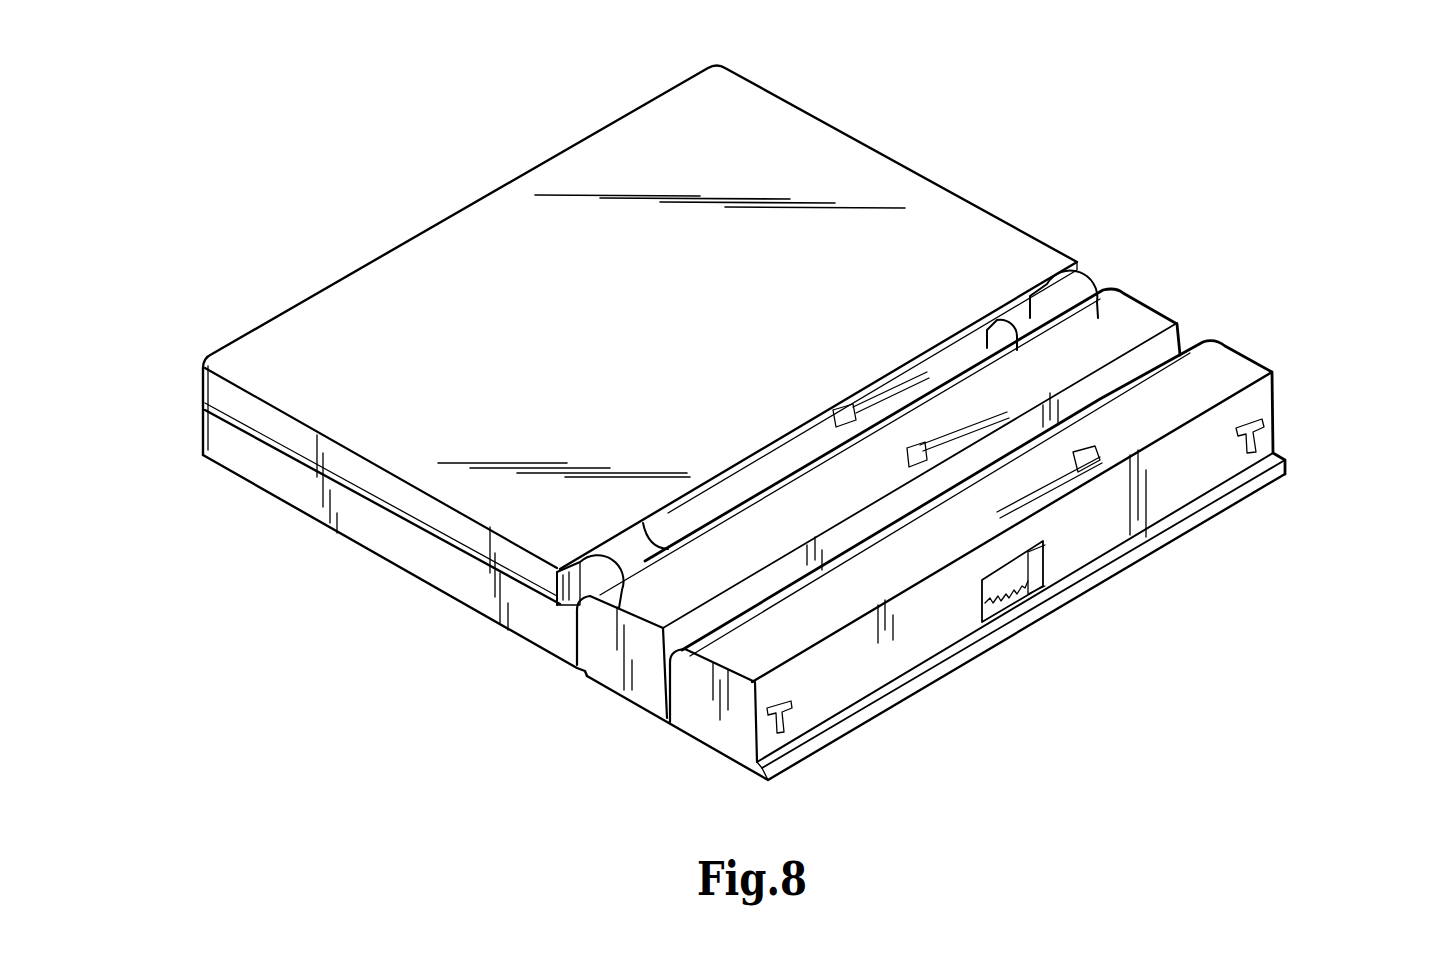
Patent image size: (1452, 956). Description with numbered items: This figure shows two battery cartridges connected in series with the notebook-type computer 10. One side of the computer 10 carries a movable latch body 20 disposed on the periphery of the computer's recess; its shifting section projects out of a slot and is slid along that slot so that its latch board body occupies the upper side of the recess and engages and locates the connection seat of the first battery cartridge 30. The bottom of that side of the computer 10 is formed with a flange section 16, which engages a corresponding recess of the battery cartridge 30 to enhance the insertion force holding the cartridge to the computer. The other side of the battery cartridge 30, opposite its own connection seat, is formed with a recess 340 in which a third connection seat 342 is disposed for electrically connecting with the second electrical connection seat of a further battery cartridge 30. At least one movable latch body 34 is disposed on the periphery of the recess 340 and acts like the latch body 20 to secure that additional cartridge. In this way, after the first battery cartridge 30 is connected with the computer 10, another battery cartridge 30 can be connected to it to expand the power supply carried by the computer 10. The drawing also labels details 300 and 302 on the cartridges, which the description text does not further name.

The notebook-type computer 10 is at (933, 242).
The flange section 16 is at (577, 670).
The movable latch body 20 is at (845, 403).
The battery cartridge 30 is at (1147, 296).
The movable latch body 34 is at (1095, 292).
The latch tab 300 is at (785, 717).
The tray 302 is at (668, 727).
The recess 340 is at (1043, 580).
The third connection seat 342 is at (1020, 600).